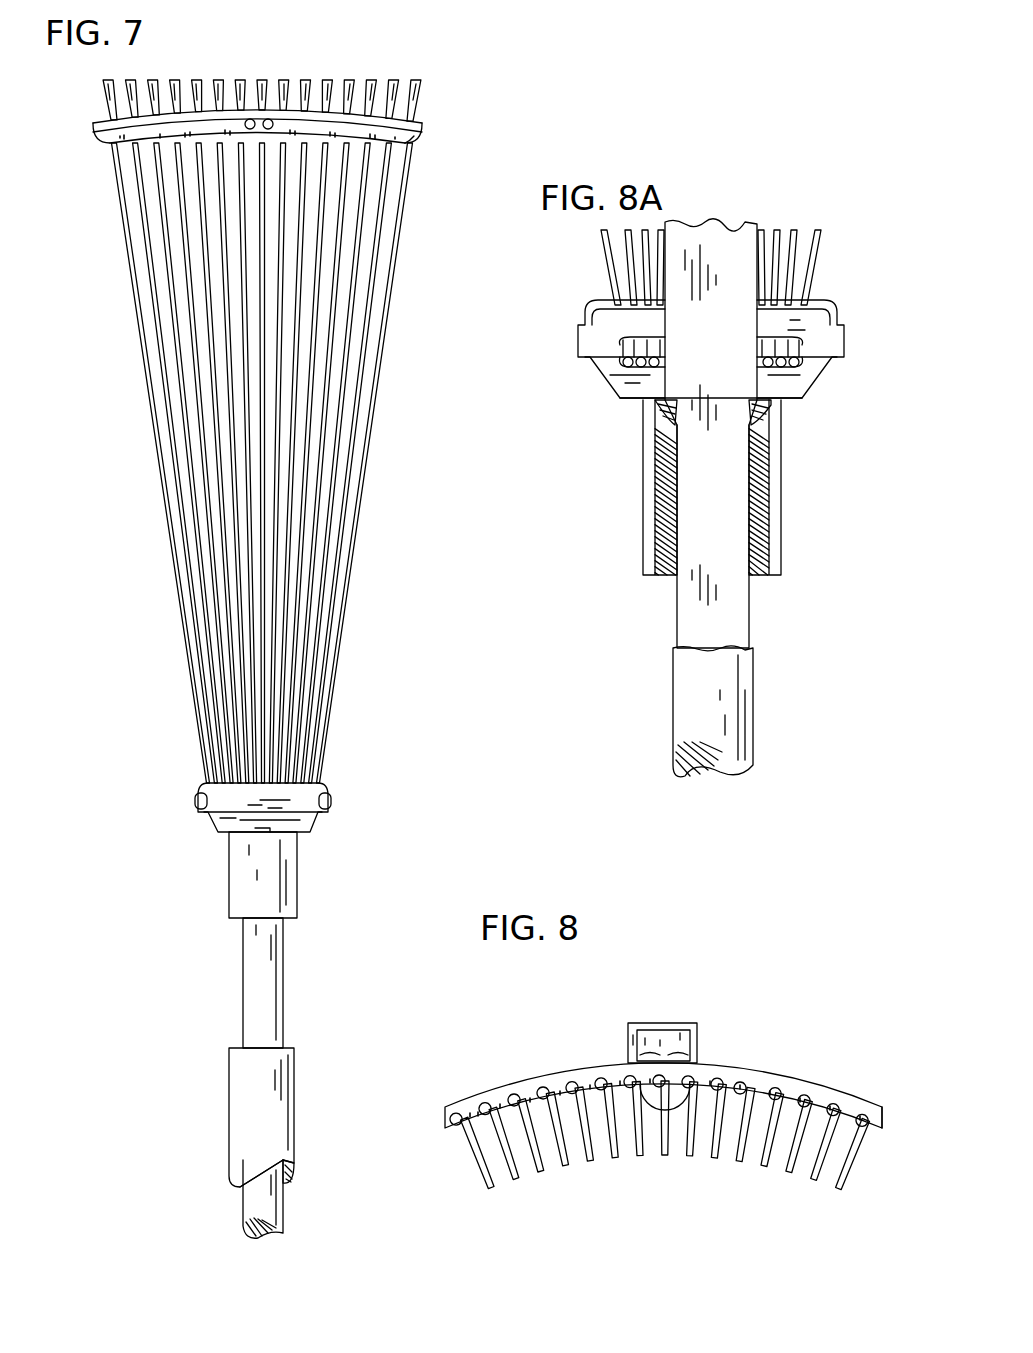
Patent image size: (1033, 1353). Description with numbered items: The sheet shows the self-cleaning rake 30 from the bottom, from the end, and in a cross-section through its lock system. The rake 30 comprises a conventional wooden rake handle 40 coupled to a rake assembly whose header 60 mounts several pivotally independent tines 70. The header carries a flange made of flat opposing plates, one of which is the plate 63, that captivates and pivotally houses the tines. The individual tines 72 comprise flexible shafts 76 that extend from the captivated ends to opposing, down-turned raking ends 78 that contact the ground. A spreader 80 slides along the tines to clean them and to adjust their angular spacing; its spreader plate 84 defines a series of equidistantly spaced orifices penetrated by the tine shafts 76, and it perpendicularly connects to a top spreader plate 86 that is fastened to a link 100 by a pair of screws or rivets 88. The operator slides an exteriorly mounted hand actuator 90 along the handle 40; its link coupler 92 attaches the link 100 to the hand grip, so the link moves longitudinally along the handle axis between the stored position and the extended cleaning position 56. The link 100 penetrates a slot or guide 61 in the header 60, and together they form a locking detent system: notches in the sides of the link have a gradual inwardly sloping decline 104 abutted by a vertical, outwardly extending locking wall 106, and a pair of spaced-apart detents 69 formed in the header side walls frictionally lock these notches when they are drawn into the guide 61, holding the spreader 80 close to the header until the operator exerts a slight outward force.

In FIG. 7, the self-cleaning rake 30 is at (106, 810).
In FIG. 8, the self-cleaning rake 30 is at (556, 983).
In FIG. 7, the rake handle 40 is at (300, 1021).
In FIG. 8A, the rake handle 40 is at (764, 703).
In FIG. 7, the extended, cleaning position 56 is at (166, 716).
In FIG. 7, the header 60 is at (320, 908).
In FIG. 8A, the header 60 is at (822, 549).
In FIG. 8A, the slot or guide 61 is at (665, 522).
In FIG. 7, the plate 63 is at (303, 792).
In FIG. 8A, the detents 69 is at (783, 396).
In FIG. 7, the tines 70 is at (94, 158).
In FIG. 8, the tines 70 is at (456, 1166).
In FIG. 7, the individual tines 72 is at (400, 196).
In FIG. 7, the flexible shafts 76 is at (150, 402).
In FIG. 7, the raking ends 78 is at (305, 78).
In FIG. 8, the raking ends 78 is at (491, 1190).
In FIG. 8, the spreader 80 is at (441, 1102).
In FIG. 7, the spreader plate 84 is at (422, 121).
In FIG. 8, the spreader plate 84 is at (800, 1100).
In FIG. 7, the top spreader plate 86 is at (410, 137).
In FIG. 8, the top spreader plate 86 is at (757, 1074).
In FIG. 7, the screws or rivets 88 is at (249, 118).
In FIG. 8, the screws or rivets 88 is at (645, 1053).
In FIG. 7, the hand actuator 90 is at (318, 1136).
In FIG. 7, the link coupler 92 is at (253, 1162).
In FIG. 7, the link 100 is at (286, 490).
In FIG. 8A, the link 100 is at (676, 599).
In FIG. 8A, the inwardly sloping decline 104 is at (762, 414).
In FIG. 8A, the locking wall 106 is at (681, 410).